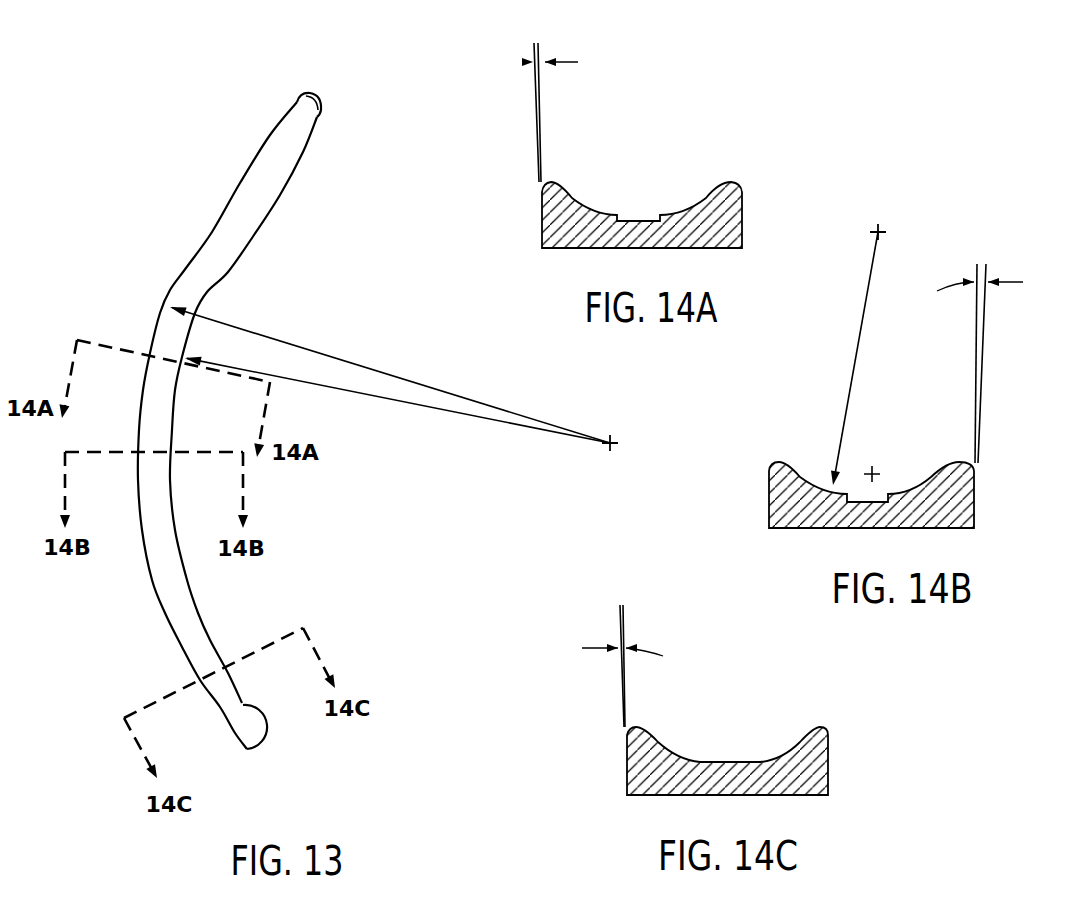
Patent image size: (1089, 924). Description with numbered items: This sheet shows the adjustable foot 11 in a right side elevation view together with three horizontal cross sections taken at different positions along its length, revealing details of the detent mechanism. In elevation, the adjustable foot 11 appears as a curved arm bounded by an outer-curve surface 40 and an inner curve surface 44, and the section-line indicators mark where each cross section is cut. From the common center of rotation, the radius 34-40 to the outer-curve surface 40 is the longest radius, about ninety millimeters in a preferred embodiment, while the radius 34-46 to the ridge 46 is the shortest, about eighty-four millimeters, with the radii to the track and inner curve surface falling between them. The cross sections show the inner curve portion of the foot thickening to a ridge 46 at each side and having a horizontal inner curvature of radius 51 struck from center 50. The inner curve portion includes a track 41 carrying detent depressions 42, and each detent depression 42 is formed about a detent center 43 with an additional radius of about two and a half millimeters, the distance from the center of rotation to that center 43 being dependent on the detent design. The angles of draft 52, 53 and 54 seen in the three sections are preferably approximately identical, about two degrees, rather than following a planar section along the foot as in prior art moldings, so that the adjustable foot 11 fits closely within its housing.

In FIG. 13, the adjustable foot 11 is at (213, 421).
In FIG. 13, the outer-curve surface 40 is at (177, 273).
In FIG. 14A, the outer-curve surface 40 is at (708, 249).
In FIG. 14B, the outer-curve surface 40 is at (940, 529).
In FIG. 14C, the outer-curve surface 40 is at (794, 796).
In FIG. 13, the ridge 46 is at (211, 284).
In FIG. 14A, the ridge 46 is at (545, 182).
In FIG. 14B, the ridge 46 is at (778, 462).
In FIG. 14C, the ridge 46 is at (635, 727).
In FIG. 13, the radius from center of rotation to outer-curve surface 34-40 is at (352, 358).
In FIG. 13, the radius from center of rotation to ridge 34-46 is at (350, 393).
In FIG. 14A, the track 41 is at (640, 216).
In FIG. 14B, the detent depression 42 is at (850, 502).
In FIG. 14B, the detent center 43 is at (876, 471).
In FIG. 14C, the inner curve surface 44 is at (692, 760).
In FIG. 14B, the center of inner curvature 50 is at (881, 228).
In FIG. 14B, the radius of inner curvature 51 is at (868, 292).
In FIG. 14A, the angle of draft 52 is at (533, 62).
In FIG. 14B, the angle of draft 53 is at (1023, 282).
In FIG. 14C, the angle of draft 54 is at (662, 655).